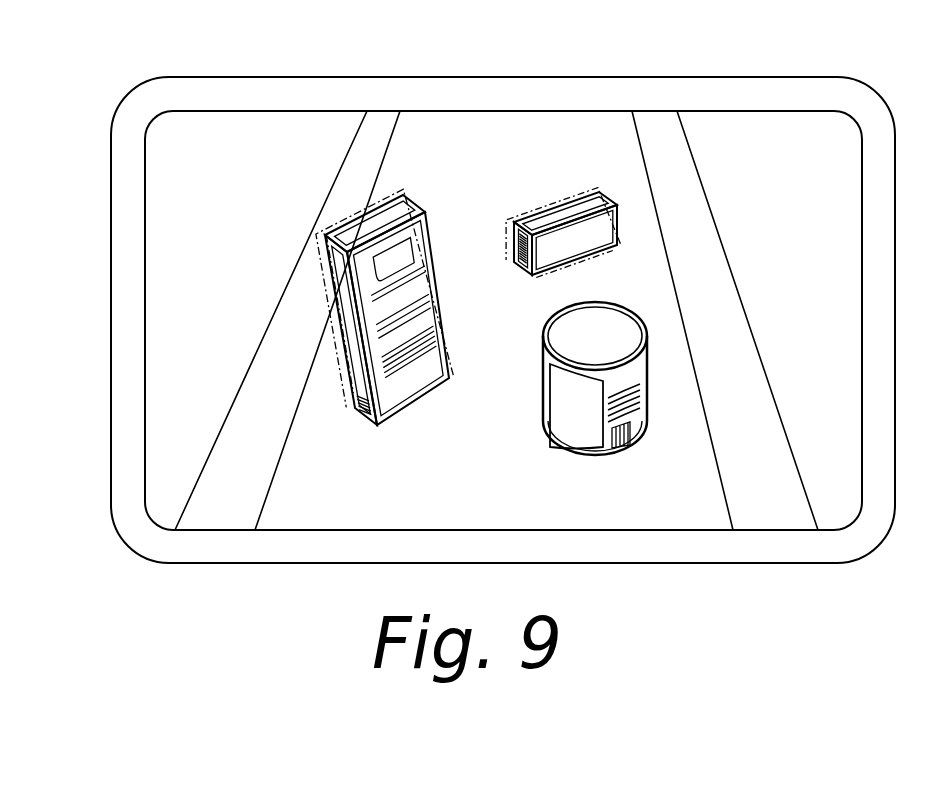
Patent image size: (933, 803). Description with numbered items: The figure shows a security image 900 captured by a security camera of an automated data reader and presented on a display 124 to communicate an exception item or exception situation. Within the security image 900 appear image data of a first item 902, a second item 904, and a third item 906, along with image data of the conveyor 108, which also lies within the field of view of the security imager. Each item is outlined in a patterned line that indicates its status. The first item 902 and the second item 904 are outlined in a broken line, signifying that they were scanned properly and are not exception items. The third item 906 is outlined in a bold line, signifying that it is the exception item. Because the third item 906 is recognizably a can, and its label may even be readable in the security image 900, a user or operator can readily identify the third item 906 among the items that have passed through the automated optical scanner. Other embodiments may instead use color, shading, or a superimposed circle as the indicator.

The display 124 is at (780, 77).
The conveyor 108 is at (610, 160).
The security image 900 is at (170, 307).
The first item 902 is at (357, 230).
The second item 904 is at (612, 200).
The third item 906 is at (638, 310).